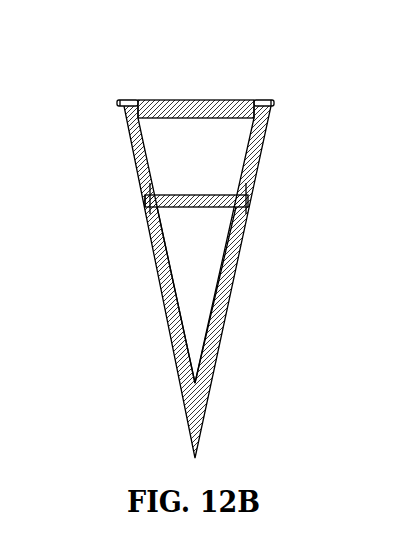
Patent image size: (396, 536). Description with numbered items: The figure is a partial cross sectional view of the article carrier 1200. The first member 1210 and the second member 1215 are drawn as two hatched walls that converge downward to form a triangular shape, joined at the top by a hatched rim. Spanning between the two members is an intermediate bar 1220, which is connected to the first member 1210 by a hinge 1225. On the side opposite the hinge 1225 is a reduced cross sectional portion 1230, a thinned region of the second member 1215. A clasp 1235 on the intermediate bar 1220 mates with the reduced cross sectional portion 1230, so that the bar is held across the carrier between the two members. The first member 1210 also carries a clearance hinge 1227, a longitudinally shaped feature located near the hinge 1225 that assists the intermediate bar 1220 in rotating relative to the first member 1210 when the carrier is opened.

The article carrier 1200 is at (292, 87).
The first member 1210 is at (130, 153).
The second member 1215 is at (263, 138).
The intermediate bar 1220 is at (197, 208).
The hinge 1225 is at (140, 202).
The clearance hinge 1227 is at (148, 185).
The reduced cross sectional portion 1230 is at (245, 218).
The clasp 1235 is at (248, 197).